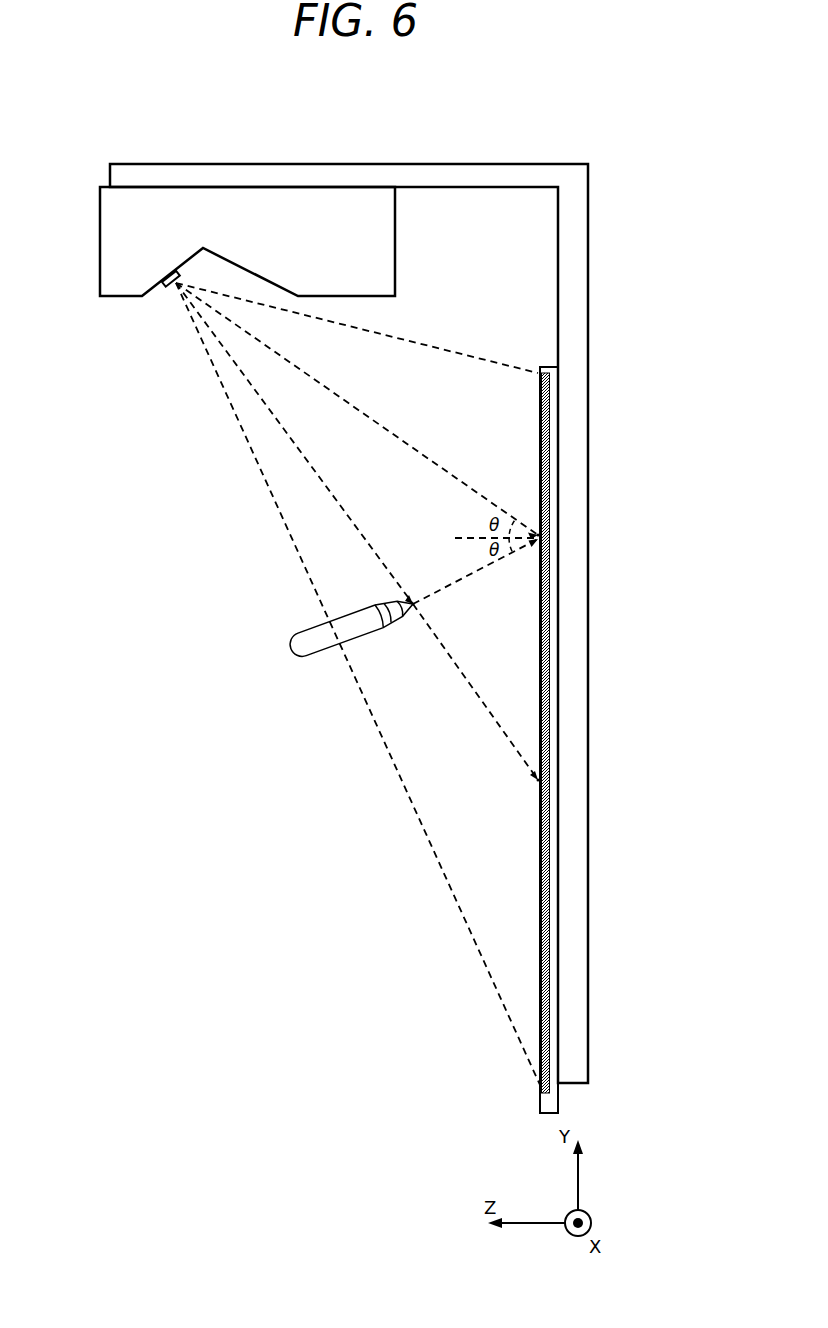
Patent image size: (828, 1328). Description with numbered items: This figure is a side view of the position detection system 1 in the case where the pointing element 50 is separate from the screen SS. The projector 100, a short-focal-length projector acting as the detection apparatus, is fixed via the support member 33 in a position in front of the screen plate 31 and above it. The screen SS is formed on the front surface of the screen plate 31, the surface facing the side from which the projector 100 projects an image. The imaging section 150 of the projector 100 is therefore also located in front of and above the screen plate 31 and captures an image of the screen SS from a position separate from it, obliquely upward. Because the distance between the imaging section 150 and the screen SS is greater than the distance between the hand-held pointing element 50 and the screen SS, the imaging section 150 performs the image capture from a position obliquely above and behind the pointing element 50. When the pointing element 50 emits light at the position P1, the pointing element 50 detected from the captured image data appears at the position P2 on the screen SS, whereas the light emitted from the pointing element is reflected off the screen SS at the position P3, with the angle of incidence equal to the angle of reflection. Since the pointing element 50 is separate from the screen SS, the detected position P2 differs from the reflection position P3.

The position detection system 1 is at (368, 585).
The projector 100 is at (284, 268).
The imaging section 150 is at (165, 287).
The support member 33 is at (581, 318).
The screen plate 31 is at (578, 714).
The screen SS is at (546, 369).
The pointing element 50 is at (314, 648).
The position of the light-emitting pointing element P1 is at (420, 608).
The detected position on the screen P2 is at (534, 790).
The reflection position P3 is at (533, 525).